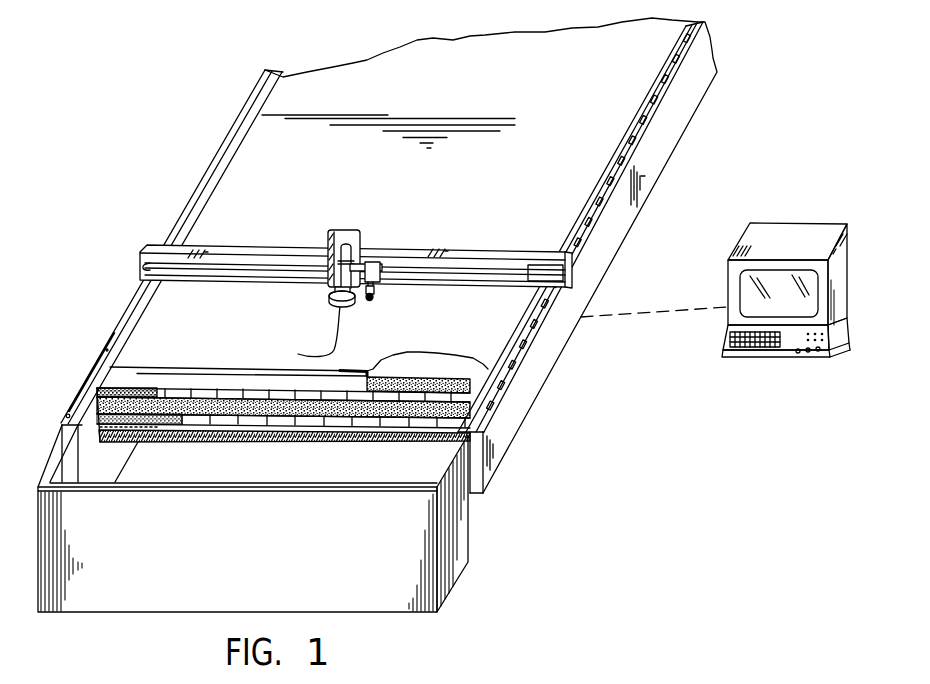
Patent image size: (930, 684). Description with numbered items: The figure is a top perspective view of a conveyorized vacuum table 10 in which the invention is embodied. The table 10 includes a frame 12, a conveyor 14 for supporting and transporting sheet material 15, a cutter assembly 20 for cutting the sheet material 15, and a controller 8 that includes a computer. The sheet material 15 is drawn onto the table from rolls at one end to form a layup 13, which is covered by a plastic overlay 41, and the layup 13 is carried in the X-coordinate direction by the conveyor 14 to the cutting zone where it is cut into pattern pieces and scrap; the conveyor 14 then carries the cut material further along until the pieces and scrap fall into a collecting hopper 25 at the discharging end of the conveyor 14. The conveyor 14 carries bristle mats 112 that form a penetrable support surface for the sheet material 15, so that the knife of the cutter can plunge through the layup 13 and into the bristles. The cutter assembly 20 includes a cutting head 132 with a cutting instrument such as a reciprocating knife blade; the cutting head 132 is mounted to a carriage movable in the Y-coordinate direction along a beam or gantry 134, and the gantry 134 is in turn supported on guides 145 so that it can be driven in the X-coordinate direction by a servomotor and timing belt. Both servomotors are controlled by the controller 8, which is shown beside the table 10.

The controller 8 is at (728, 277).
The conveyorized vacuum table 10 is at (197, 161).
The frame 12 is at (633, 222).
The layup 13 is at (162, 328).
The conveyor 14 is at (214, 445).
The sheet material 15 is at (485, 378).
The cutter assembly 20 is at (327, 249).
The collecting hopper 25 is at (305, 471).
The plastic overlay 41 is at (487, 320).
The bristle mat 112 is at (479, 410).
The cutting head 132 is at (330, 288).
The gantry 134 is at (487, 249).
The guides 145 is at (98, 369).